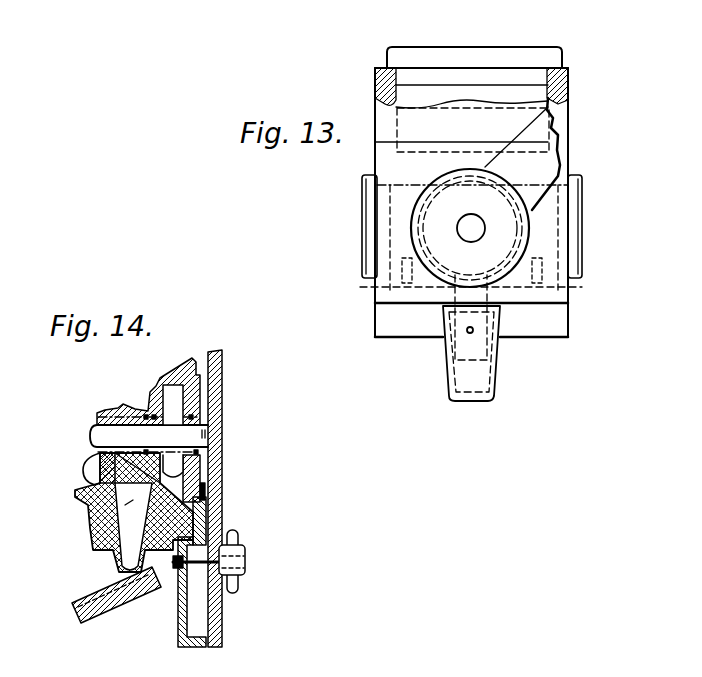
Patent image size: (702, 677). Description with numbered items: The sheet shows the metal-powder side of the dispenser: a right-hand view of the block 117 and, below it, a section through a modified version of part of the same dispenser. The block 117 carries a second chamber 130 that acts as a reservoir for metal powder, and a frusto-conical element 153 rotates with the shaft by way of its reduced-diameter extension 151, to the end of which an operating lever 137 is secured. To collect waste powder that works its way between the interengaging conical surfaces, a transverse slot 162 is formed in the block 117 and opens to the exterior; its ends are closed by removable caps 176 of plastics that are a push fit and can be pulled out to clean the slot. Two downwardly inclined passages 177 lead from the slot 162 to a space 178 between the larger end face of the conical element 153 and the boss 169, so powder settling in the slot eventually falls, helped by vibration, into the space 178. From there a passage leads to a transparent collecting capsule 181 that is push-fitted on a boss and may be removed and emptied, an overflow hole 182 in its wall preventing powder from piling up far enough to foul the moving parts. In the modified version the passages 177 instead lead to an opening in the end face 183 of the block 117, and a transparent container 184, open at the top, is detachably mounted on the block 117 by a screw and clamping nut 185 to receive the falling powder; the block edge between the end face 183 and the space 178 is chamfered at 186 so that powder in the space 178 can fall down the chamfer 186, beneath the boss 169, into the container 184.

In FIG. 13, the second chamber 130 is at (507, 92).
In FIG. 13, the operating lever 137 is at (547, 120).
In FIG. 13, the removable caps 176 is at (367, 207).
In FIG. 13, the transverse slot 162 is at (397, 228).
In FIG. 14, the transverse slot 162 is at (92, 470).
In FIG. 13, the frusto-conical element 153 is at (432, 202).
In FIG. 13, the extension 151 is at (484, 229).
In FIG. 13, the downwardly inclined passages 177 is at (464, 276).
In FIG. 14, the downwardly inclined passages 177 is at (140, 498).
In FIG. 13, the block 117 is at (562, 325).
In FIG. 14, the block 117 is at (94, 545).
In FIG. 13, the boss 169 is at (449, 272).
In FIG. 14, the boss 169 is at (206, 462).
In FIG. 13, the transparent collecting capsule 181 is at (478, 380).
In FIG. 13, the overflow hole 182 is at (473, 333).
In FIG. 14, the space 178 is at (203, 444).
In FIG. 14, the chamfer 186 is at (182, 489).
In FIG. 14, the end face 183 is at (196, 524).
In FIG. 14, the transparent container 184 is at (221, 621).
In FIG. 14, the screw and clamping nut 185 is at (248, 559).